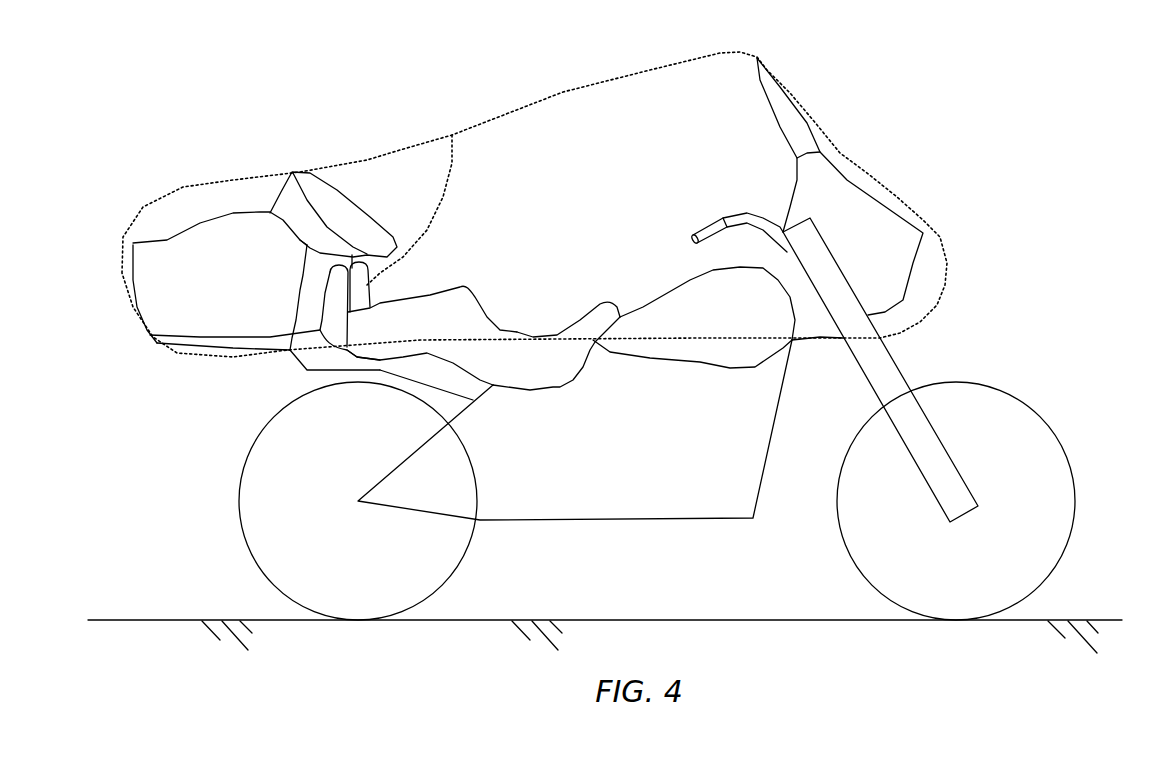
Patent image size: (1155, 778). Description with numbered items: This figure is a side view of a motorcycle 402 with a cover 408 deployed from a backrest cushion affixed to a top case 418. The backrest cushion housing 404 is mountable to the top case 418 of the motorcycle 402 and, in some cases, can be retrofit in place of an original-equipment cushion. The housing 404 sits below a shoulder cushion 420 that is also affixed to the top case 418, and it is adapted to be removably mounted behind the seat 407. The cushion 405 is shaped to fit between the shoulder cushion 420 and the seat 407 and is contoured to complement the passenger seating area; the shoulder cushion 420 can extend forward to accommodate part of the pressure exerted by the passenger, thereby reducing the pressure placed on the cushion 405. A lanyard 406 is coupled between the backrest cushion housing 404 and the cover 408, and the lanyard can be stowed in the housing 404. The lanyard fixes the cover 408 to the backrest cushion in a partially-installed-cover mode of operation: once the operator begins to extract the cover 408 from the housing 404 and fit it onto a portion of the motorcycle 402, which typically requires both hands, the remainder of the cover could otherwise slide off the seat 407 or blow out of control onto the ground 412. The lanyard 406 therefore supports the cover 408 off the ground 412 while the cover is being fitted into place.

The motorcycle 402 is at (265, 486).
The backrest cushion housing 404 is at (370, 307).
The cushion 405 is at (321, 309).
The lanyard 406 is at (453, 165).
The seat 407 is at (517, 332).
The cover 408 is at (563, 92).
The ground 412 is at (170, 620).
The top case 418 is at (173, 298).
The shoulder cushion 420 is at (284, 191).